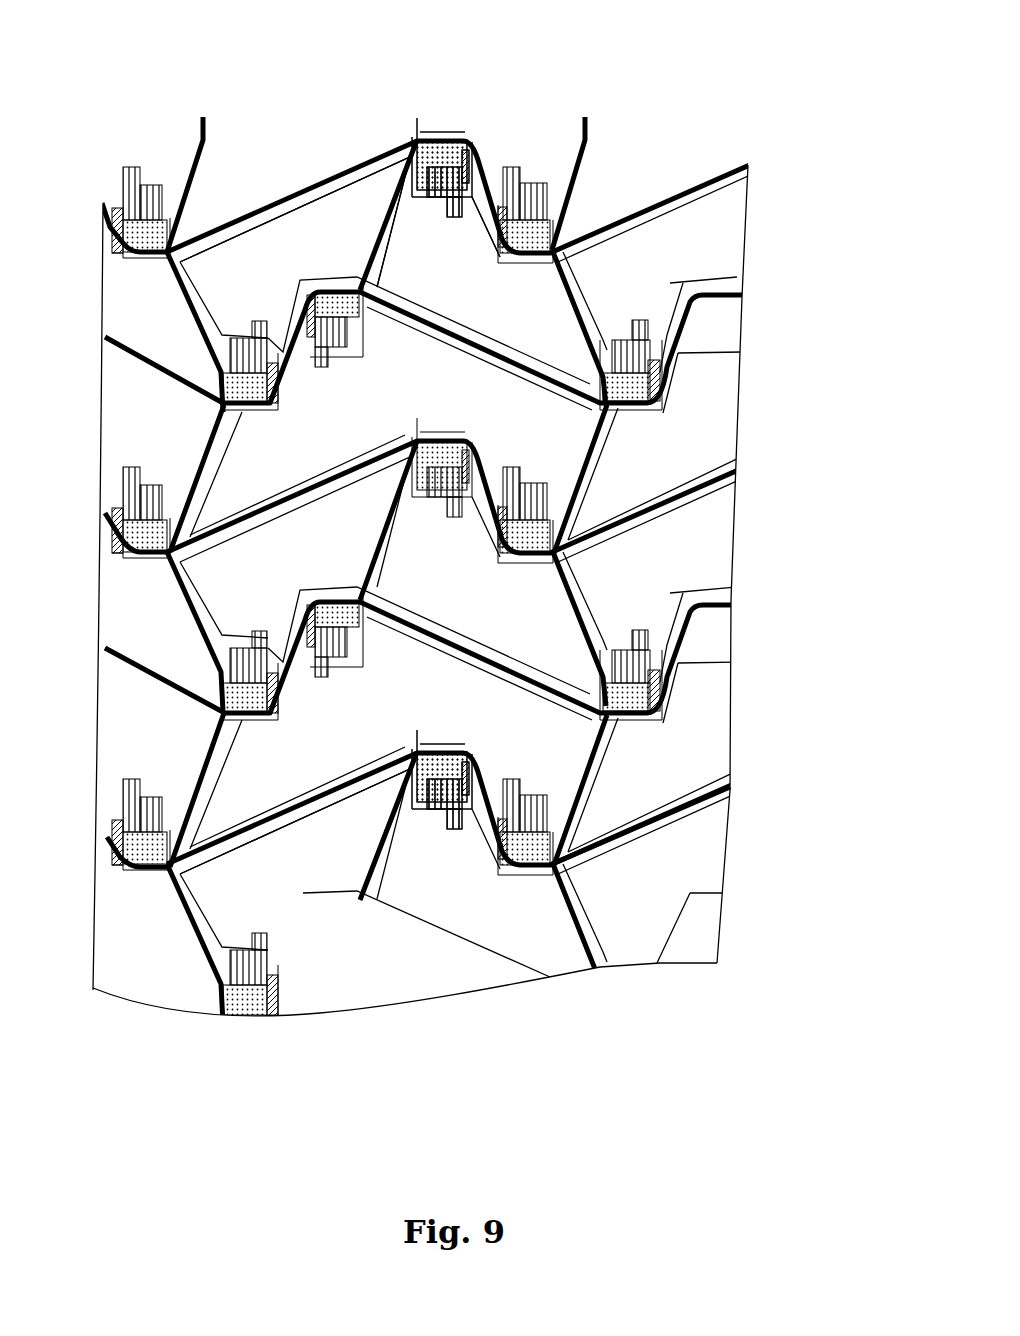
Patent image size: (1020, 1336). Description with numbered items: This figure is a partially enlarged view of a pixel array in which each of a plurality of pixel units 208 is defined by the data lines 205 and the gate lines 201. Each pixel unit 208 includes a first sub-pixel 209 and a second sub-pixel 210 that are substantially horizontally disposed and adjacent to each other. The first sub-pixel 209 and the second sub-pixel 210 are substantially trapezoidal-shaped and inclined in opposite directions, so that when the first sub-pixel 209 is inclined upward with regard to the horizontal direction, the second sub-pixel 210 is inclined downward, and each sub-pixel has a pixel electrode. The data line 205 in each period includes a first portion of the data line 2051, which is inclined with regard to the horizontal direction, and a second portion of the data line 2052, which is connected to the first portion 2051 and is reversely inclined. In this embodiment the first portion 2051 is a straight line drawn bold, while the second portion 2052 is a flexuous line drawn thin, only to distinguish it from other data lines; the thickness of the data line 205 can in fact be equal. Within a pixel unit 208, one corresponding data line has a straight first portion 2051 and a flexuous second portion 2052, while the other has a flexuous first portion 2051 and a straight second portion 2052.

The gate line 201 is at (590, 124).
The data line 205 is at (705, 793).
The first portion of the data line 2051 is at (277, 823).
The second portion of the data line 2052 is at (470, 777).
The pixel unit 208 is at (505, 60).
The first sub-pixel 209 is at (369, 205).
The second sub-pixel 210 is at (466, 252).